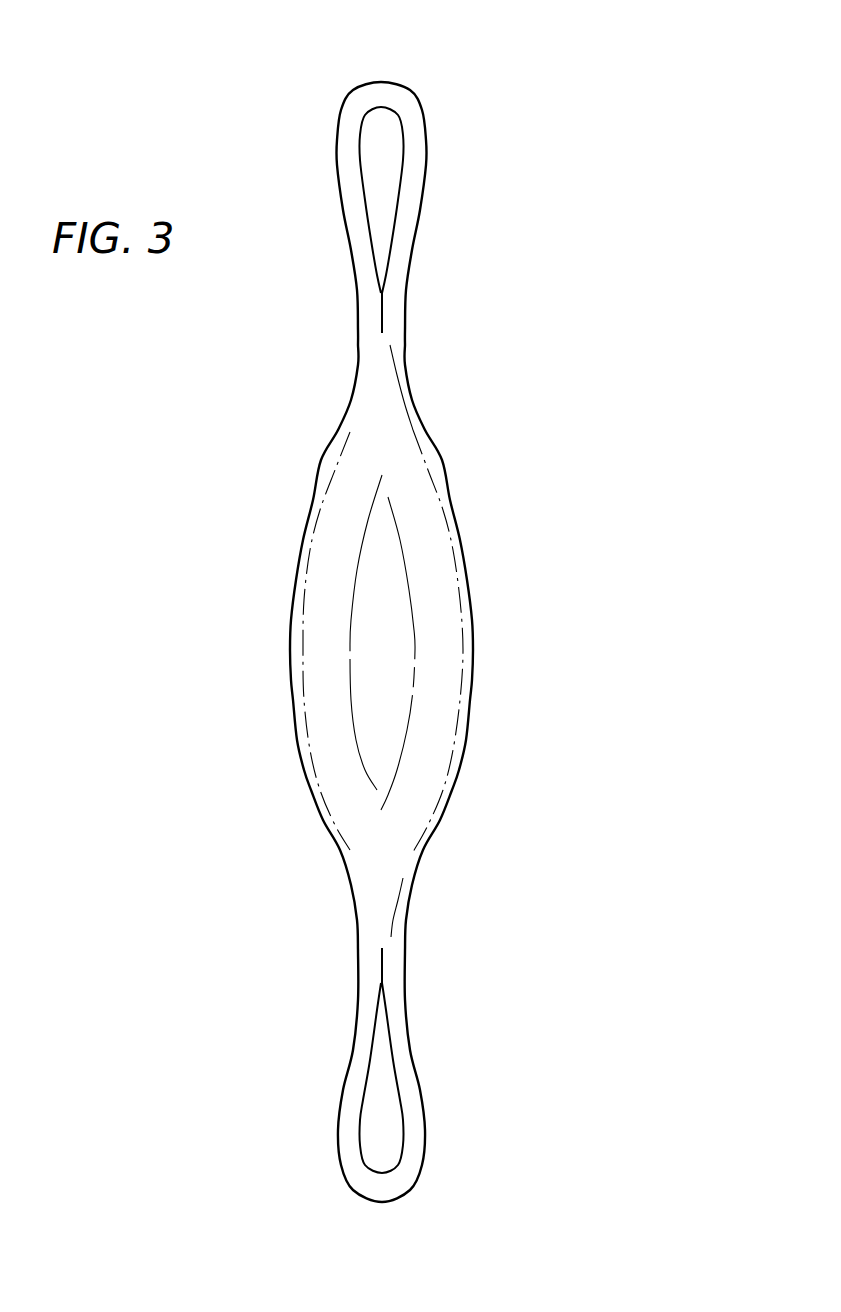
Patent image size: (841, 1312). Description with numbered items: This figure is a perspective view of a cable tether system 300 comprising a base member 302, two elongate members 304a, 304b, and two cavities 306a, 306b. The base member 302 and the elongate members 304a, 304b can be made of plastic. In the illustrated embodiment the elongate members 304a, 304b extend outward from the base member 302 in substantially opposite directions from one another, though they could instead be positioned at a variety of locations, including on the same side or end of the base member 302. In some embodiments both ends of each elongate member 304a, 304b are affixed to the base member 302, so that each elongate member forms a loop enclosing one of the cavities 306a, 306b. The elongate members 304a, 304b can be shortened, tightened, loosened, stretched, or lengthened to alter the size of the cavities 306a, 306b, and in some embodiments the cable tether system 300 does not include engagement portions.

The cable tether system 300 is at (600, 103).
The base member 302 is at (318, 633).
The elongate member 304a is at (412, 130).
The elongate member 304b is at (407, 1167).
The cavity 306a is at (380, 157).
The cavity 306b is at (382, 1117).